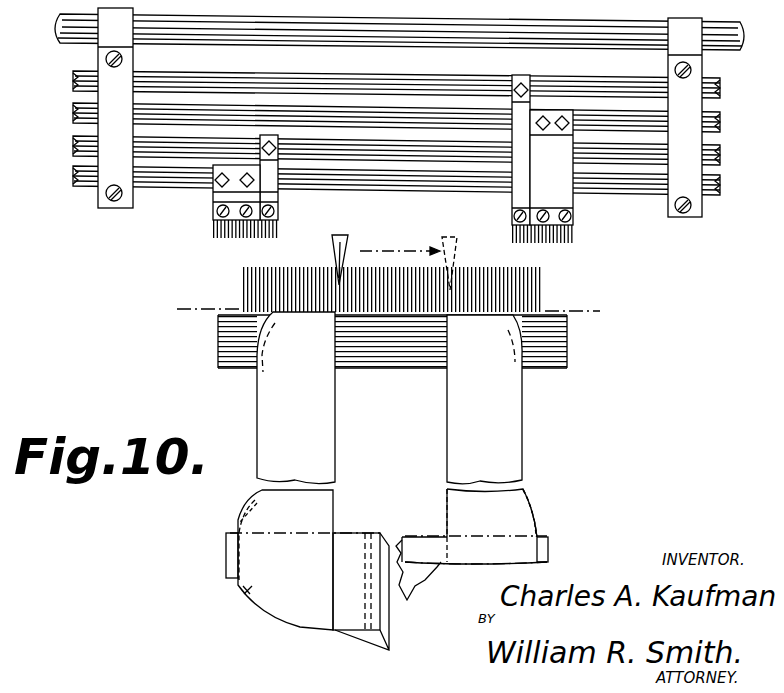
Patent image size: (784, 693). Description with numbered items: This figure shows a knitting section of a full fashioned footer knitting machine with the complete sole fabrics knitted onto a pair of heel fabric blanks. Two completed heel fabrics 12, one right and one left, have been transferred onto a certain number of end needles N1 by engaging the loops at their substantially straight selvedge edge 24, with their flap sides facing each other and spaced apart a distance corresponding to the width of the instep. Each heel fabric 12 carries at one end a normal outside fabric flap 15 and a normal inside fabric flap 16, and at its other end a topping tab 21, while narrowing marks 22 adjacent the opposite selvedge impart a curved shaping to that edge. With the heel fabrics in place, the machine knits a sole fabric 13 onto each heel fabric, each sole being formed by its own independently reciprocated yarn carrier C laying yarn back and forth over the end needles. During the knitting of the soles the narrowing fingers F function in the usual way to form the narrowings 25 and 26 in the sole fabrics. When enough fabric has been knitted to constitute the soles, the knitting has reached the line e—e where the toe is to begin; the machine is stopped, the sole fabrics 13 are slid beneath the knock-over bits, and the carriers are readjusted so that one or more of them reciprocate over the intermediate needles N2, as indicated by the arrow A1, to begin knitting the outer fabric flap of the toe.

The narrowing fingers F is at (268, 200).
The end needles N1 is at (253, 281).
The intermediate needles N2 is at (383, 307).
The line e— e is at (387, 311).
The yarn carrier C is at (318, 260).
The arrow A1 is at (408, 263).
The sole fabric 13 is at (452, 436).
The narrowing 26 is at (263, 372).
The heel fabric 12 is at (276, 610).
The narrowing 25 is at (256, 504).
The topping tab 21 is at (229, 552).
The narrowing marks 22 is at (246, 589).
The selvedge edge 24 is at (288, 528).
The fabric flap 16 is at (373, 512).
The fabric flap 15 is at (366, 638).